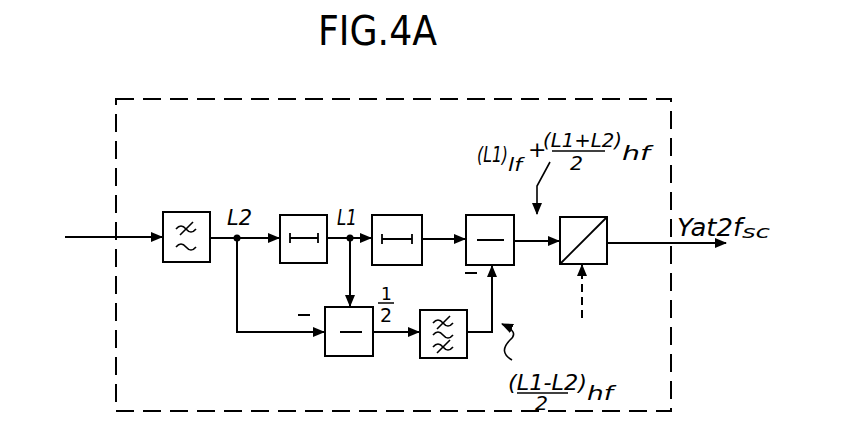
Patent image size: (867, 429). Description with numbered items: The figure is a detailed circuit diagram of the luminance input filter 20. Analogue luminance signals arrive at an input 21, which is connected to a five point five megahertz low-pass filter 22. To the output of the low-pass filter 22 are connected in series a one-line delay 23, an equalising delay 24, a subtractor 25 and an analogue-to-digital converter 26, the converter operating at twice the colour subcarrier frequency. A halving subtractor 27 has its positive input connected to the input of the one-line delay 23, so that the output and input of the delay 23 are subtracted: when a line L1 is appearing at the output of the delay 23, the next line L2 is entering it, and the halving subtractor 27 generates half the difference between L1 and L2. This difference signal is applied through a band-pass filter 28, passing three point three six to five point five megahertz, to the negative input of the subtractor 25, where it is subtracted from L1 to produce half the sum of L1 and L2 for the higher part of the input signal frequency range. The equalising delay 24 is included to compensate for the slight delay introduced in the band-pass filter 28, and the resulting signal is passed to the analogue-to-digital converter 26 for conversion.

The luminance input filter 20 is at (393, 237).
The input 21 is at (108, 243).
The 5.5 MHz low-pass filter 22 is at (182, 212).
The one-line delay 23 is at (307, 263).
The equalising delay 24 is at (422, 233).
The subtractor 25 is at (503, 215).
The analogue-to-digital converter 26 is at (607, 253).
The halving subtractor 27 is at (342, 357).
The 3.36 to 5.5 MHz band-pass filter 28 is at (418, 358).